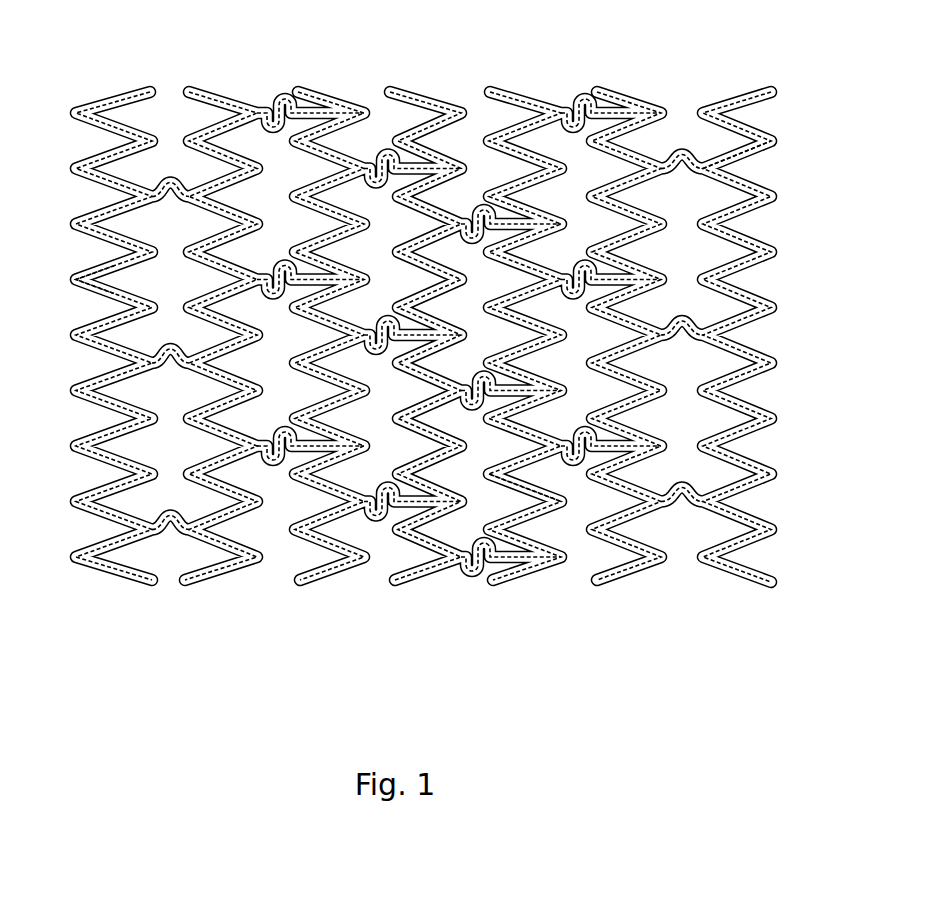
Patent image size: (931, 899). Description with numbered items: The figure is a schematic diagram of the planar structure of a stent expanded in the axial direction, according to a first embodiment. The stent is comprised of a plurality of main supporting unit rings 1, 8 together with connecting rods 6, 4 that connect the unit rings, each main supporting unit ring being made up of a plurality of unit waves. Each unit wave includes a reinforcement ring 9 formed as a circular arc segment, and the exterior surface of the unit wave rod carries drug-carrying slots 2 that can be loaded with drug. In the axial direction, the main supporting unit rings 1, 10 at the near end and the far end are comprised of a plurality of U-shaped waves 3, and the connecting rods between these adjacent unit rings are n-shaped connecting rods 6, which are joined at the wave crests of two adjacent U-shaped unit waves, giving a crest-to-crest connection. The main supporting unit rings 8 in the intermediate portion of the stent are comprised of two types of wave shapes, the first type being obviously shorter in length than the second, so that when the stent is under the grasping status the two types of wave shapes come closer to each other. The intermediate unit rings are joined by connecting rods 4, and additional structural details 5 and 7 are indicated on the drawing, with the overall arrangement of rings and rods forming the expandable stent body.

The main supporting unit ring 1 is at (92, 103).
The drug-carrying slots 2 is at (222, 103).
The U-shaped wave 3 is at (713, 160).
The connecting rod 4 is at (383, 152).
The wave-shaped ring 5 is at (560, 575).
The n-shaped connecting rod 6 is at (681, 152).
The support strut 7 is at (500, 487).
The main supporting unit ring 8 is at (422, 97).
The reinforcement ring 9 is at (70, 287).
The main supporting unit ring 10 is at (725, 578).